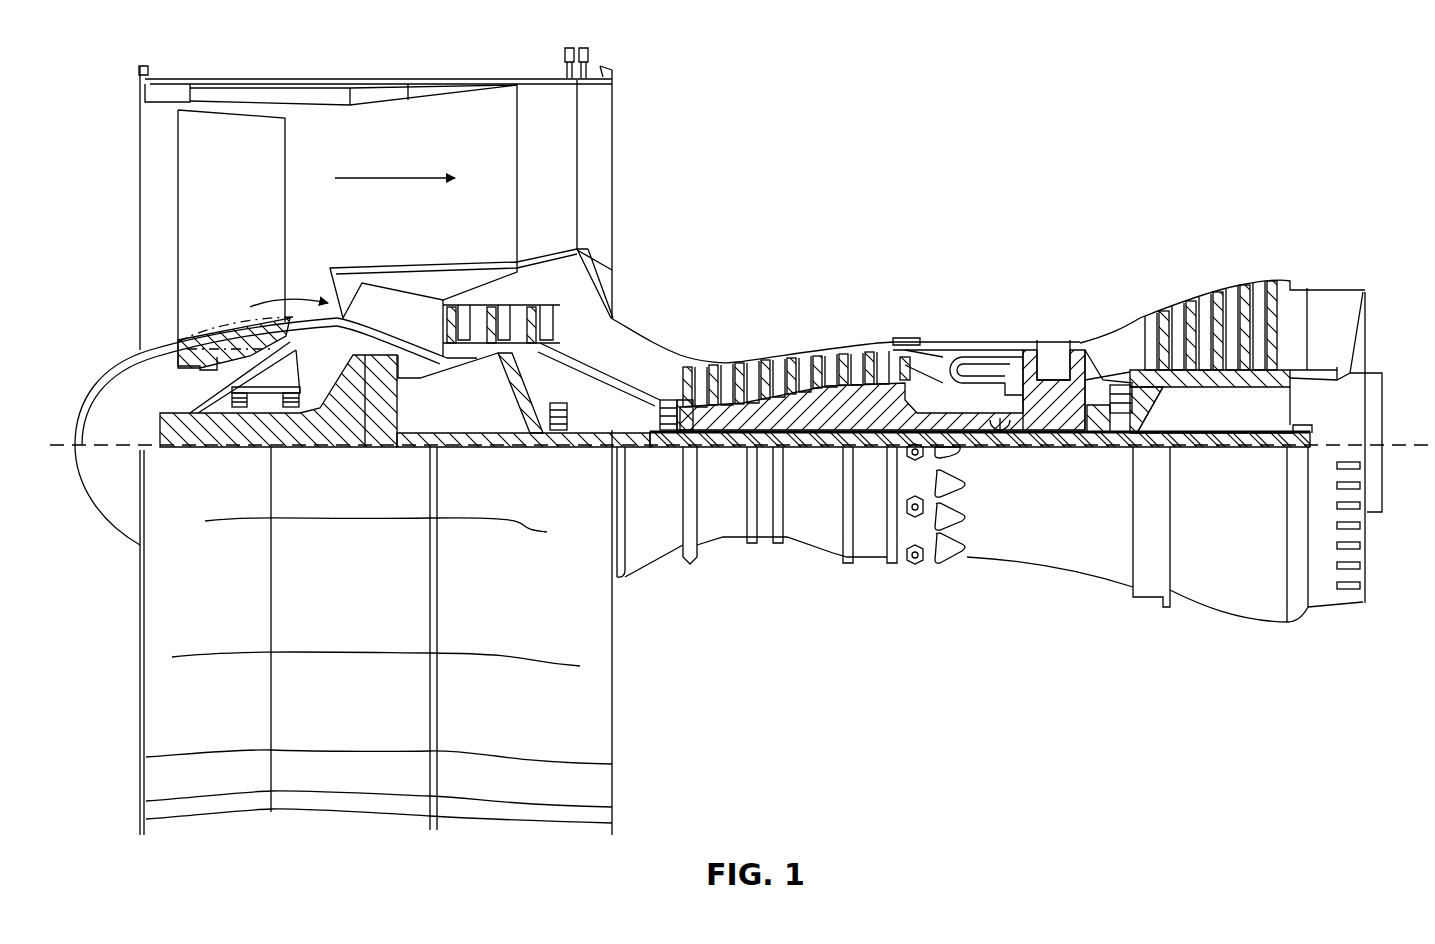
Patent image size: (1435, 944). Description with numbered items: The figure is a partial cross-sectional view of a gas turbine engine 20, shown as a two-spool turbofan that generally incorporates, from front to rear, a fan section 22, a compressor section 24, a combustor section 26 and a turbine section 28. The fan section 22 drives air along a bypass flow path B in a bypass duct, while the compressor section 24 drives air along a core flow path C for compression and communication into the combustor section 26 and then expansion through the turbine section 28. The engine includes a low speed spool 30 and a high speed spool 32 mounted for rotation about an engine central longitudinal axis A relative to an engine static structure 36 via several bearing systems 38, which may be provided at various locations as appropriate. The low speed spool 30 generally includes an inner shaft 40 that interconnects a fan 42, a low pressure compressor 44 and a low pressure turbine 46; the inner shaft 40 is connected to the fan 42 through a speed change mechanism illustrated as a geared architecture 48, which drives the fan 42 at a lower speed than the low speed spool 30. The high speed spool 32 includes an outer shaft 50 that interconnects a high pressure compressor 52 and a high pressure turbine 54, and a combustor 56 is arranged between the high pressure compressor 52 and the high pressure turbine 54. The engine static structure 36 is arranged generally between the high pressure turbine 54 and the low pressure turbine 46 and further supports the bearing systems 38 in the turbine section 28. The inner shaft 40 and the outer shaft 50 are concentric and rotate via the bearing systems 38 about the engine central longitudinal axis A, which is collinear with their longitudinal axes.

The gas turbine engine 20 is at (1190, 112).
The fan section 22 is at (262, 70).
The compressor section 24 is at (800, 306).
The combustor section 26 is at (969, 304).
The turbine section 28 is at (1116, 286).
The low speed spool 30 is at (839, 451).
The high speed spool 32 is at (890, 393).
The engine static structure 36 is at (875, 571).
The bearing systems 38 is at (234, 415).
The inner shaft 40 is at (627, 440).
The fan 42 is at (252, 202).
The low pressure compressor 44 is at (512, 335).
The low pressure turbine 46 is at (1220, 300).
The geared architecture 48 is at (370, 428).
The outer shaft 50 is at (998, 440).
The high pressure compressor 52 is at (793, 360).
The high pressure turbine 54 is at (1052, 345).
The combustor 56 is at (978, 362).
The engine central longitudinal axis A is at (1392, 443).
The bypass flow path B is at (400, 178).
The core flow path C is at (262, 305).